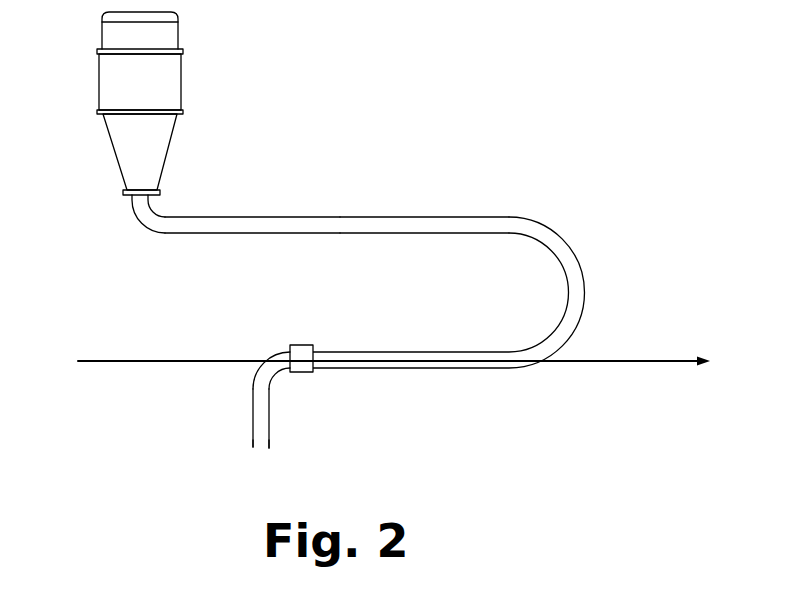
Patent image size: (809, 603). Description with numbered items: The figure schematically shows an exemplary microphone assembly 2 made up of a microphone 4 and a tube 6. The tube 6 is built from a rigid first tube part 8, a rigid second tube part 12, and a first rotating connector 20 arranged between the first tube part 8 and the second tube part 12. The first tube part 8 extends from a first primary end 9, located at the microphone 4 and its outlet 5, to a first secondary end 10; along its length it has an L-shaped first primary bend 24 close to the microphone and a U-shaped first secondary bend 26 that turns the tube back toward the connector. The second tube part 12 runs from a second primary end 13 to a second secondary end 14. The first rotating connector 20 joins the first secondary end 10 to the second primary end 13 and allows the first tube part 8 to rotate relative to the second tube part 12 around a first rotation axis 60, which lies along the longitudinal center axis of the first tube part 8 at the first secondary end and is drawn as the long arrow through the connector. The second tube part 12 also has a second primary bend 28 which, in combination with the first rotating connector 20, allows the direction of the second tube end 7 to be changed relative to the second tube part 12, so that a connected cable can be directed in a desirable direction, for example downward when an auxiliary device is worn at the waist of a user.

The microphone assembly 2 is at (599, 69).
The microphone 4 is at (184, 85).
The outlet 5 is at (95, 166).
The first primary end 9 is at (130, 197).
The first primary bend 24 is at (147, 222).
The tube 6 is at (242, 217).
The first tube part 8 is at (418, 218).
The first secondary bend 26 is at (577, 265).
The first secondary end 10 is at (340, 395).
The second primary end 13 is at (340, 395).
The first rotating connector 20 is at (293, 375).
The second primary bend 28 is at (272, 355).
The second tube part 12 is at (252, 397).
The second tube end 7 is at (307, 465).
The second secondary end 14 is at (268, 448).
The first rotation axis 60 is at (622, 361).